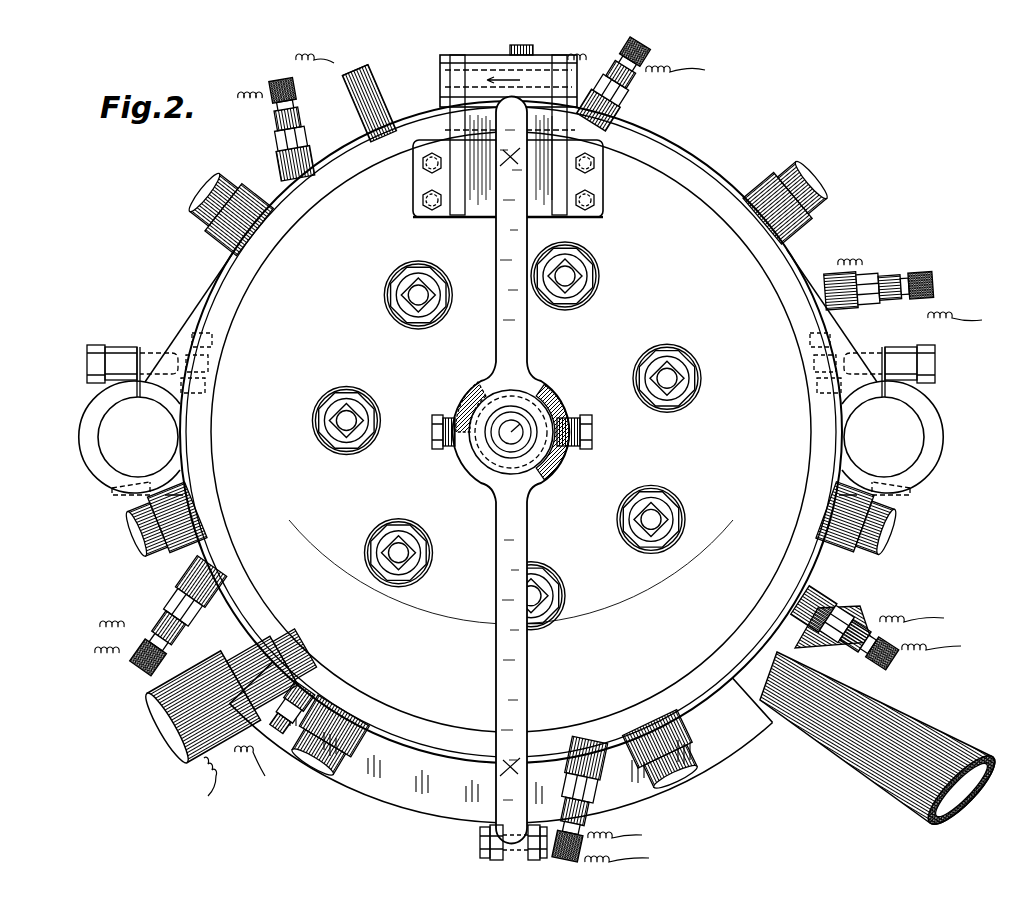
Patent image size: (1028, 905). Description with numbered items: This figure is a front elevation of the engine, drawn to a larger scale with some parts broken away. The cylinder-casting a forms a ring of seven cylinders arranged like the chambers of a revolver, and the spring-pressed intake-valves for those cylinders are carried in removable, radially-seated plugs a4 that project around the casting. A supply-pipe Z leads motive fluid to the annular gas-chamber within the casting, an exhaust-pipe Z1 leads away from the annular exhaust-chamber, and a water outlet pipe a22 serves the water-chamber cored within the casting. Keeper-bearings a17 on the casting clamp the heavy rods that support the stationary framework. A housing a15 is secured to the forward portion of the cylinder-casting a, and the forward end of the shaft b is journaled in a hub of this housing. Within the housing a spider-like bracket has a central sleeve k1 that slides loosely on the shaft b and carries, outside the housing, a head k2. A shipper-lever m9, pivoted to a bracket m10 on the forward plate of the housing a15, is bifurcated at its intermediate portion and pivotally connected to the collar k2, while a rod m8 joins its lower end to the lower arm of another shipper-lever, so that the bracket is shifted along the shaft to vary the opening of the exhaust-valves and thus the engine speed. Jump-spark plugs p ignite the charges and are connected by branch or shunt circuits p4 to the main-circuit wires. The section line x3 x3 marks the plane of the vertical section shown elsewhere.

The cylinder-casting a is at (225, 285).
The housing a15 is at (676, 200).
The removable radially-seated plugs a4 is at (218, 197).
The keeper-bearings a17 is at (92, 437).
The water outlet pipe a22 is at (354, 82).
The bracket m10 is at (466, 78).
The shipper-lever m9 is at (513, 333).
The rod m8 is at (480, 843).
The section line x3 is at (510, 461).
The shaft b is at (540, 420).
The central sleeve k1 is at (470, 455).
The head k2 is at (484, 404).
The jump-spark plugs p is at (282, 132).
The branch or shunt circuits p4 is at (238, 98).
The supply-pipe Z is at (190, 716).
The exhaust-pipe Z1 is at (915, 722).